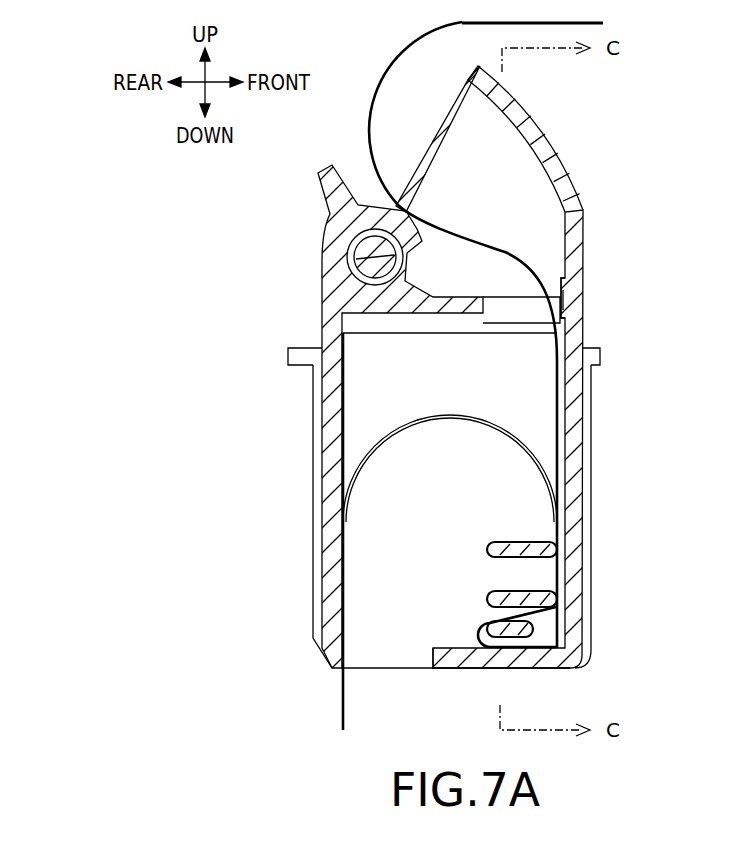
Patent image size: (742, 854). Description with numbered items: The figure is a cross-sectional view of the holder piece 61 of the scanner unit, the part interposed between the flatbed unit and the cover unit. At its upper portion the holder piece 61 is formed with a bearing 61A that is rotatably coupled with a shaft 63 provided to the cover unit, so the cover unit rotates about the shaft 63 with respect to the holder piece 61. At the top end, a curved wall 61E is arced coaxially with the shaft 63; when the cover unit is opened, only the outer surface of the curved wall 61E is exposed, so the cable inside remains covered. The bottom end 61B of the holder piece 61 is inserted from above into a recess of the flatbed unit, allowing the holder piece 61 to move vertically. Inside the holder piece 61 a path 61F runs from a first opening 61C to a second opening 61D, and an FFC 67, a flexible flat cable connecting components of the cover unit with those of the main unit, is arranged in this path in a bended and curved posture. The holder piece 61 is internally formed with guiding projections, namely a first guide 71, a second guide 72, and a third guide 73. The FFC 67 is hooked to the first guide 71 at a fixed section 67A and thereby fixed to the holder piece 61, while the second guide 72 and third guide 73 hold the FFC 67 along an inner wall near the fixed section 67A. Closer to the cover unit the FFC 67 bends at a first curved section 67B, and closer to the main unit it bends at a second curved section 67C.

The holder piece 61 is at (614, 196).
The bearing 61A is at (350, 230).
The bottom end 61B is at (510, 672).
The first opening 61C is at (430, 146).
The second opening 61D is at (402, 669).
The curved wall 61E is at (548, 131).
The path 61F is at (528, 242).
The shaft 63 is at (377, 258).
The FFC 67 is at (341, 694).
The fixed section 67A is at (481, 619).
The first curved section 67B is at (385, 73).
The second curved section 67C is at (448, 418).
The first guide 71 is at (528, 630).
The second guide 72 is at (530, 601).
The third guide 73 is at (545, 551).